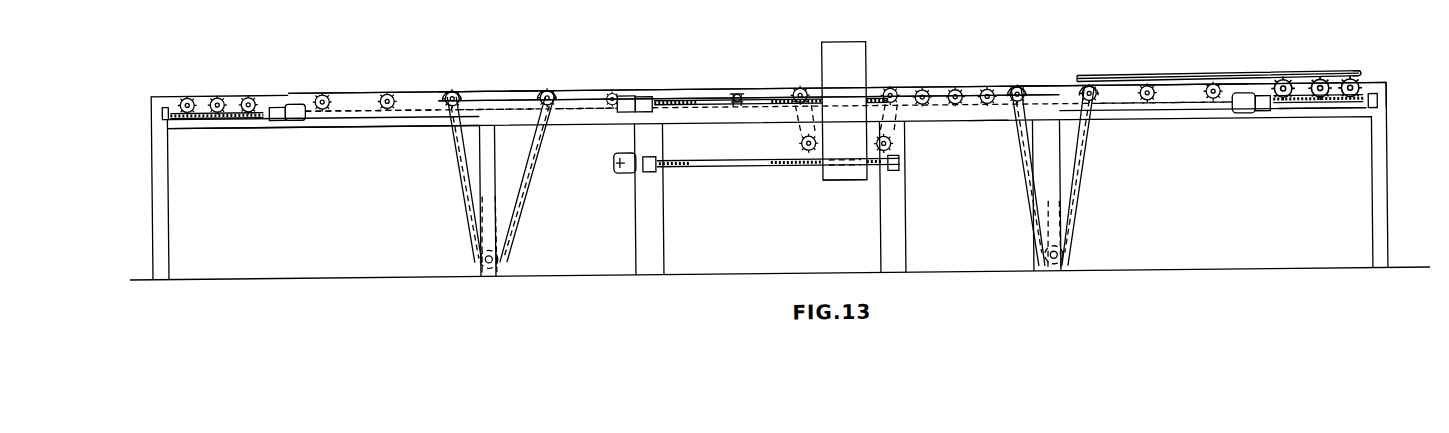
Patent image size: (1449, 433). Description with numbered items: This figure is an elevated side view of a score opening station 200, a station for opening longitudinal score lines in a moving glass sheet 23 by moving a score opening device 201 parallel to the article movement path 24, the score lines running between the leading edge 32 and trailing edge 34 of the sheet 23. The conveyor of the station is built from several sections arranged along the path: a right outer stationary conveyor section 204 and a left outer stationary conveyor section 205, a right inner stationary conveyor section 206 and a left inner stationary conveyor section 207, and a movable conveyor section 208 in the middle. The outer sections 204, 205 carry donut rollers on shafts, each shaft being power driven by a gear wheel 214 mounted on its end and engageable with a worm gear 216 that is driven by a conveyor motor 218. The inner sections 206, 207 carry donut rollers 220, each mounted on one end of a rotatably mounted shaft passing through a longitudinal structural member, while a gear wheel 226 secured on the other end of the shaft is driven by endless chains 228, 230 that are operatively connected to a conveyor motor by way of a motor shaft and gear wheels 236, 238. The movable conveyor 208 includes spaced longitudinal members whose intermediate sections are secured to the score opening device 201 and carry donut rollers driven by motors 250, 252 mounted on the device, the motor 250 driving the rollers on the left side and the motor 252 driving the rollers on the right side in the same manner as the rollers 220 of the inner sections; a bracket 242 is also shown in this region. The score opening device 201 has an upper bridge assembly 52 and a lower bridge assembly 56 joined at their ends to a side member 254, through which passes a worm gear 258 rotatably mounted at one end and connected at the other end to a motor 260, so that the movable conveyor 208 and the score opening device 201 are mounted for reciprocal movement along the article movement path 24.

The sheet 23 is at (1304, 68).
The article movement path 24 is at (1394, 75).
The leading edge 32 is at (1081, 90).
The trailing edge 34 is at (1370, 68).
The upper bridge assembly 52 is at (850, 39).
The lower bridge assembly 56 is at (843, 194).
The score opening station 200 is at (1194, 54).
The score opening device 201 is at (887, 61).
The right outer stationary conveyor section 204 is at (1323, 133).
The left outer stationary conveyor section 205 is at (211, 141).
The right inner stationary conveyor section 206 is at (1049, 73).
The left inner stationary conveyor section 207 is at (489, 82).
The movable conveyor section 208 is at (741, 96).
The gear wheel 214 is at (228, 98).
The worm gear 216 is at (239, 118).
The conveyor motor 218 is at (294, 123).
The donut rollers 220 is at (686, 93).
The gear wheel 226 is at (387, 95).
The endless chain 228 is at (407, 118).
The endless chain 230 is at (461, 201).
The gear wheel 236 is at (506, 262).
The gear wheel 238 is at (529, 106).
The bracket 242 is at (993, 127).
The motor 250 is at (799, 150).
The motor 252 is at (897, 147).
The side member 254 is at (824, 73).
The worm gear 258 is at (715, 173).
The motor 260 is at (616, 168).